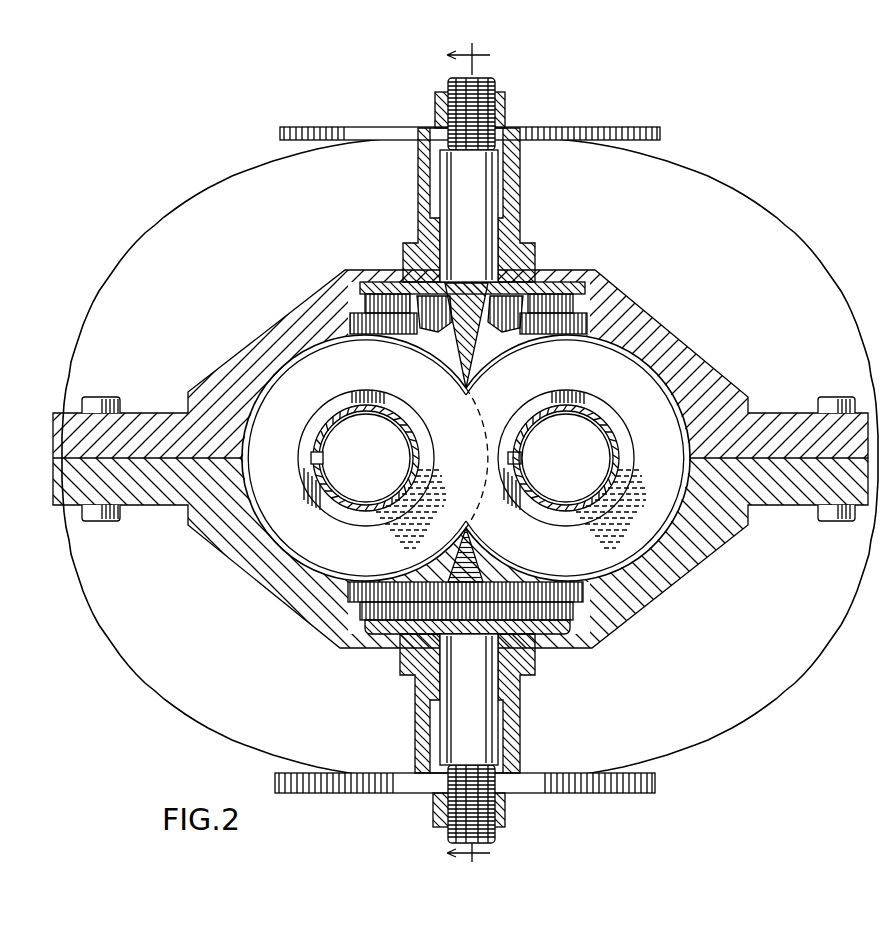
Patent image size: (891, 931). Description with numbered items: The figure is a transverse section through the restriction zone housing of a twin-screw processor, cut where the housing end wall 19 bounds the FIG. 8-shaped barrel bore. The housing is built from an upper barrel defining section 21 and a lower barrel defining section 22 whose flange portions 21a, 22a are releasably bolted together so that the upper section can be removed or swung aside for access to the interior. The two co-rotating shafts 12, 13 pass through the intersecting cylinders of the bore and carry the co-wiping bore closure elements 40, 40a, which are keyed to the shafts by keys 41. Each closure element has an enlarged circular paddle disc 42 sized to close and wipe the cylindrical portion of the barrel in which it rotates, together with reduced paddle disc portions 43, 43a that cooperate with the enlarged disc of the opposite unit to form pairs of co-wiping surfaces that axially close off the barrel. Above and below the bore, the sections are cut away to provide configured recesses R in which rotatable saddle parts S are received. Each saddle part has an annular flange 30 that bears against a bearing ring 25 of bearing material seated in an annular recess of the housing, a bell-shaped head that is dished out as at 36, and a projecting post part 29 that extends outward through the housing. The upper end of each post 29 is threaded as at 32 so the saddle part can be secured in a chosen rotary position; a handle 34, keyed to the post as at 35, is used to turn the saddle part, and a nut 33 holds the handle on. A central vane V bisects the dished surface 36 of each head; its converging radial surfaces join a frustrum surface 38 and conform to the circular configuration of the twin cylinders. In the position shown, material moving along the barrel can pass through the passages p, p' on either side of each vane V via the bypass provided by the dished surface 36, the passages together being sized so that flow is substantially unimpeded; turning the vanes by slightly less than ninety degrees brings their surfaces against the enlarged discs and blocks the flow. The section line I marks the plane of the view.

The end wall 19 is at (793, 260).
The upper barrel defining section 21 is at (629, 318).
The flange portion 21a is at (770, 414).
The lower barrel defining section 22 is at (700, 552).
The flange portion 22a is at (138, 505).
The bearing ring 25 is at (363, 603).
The post part 29 is at (460, 175).
The annular flange 30 is at (340, 322).
The threaded portion 32 is at (438, 110).
The nut 33 is at (500, 110).
The handle 34 is at (633, 127).
The key 35 is at (429, 200).
The dished portion 36 is at (435, 342).
The frustrum surface 38 is at (468, 375).
The bore closure element 40 is at (276, 567).
The bore closure element 40a is at (658, 568).
The key 41 is at (311, 458).
The enlarged circular paddle disc 42 is at (313, 353).
The reduced paddle disc portion 43 is at (317, 428).
The reduced paddle disc portion 43a is at (624, 435).
The shaft 12 is at (330, 488).
The shaft 13 is at (530, 490).
The passage p is at (411, 407).
The passage p' is at (524, 404).
The recess R is at (548, 282).
The vane V is at (477, 320).
The saddle part S is at (396, 641).
The section line I is at (474, 454).